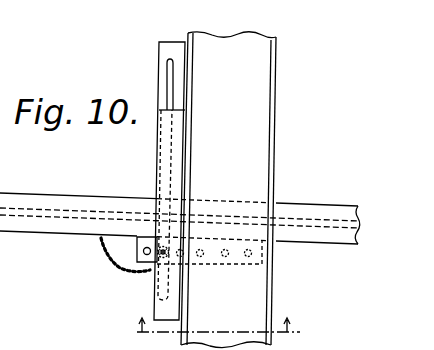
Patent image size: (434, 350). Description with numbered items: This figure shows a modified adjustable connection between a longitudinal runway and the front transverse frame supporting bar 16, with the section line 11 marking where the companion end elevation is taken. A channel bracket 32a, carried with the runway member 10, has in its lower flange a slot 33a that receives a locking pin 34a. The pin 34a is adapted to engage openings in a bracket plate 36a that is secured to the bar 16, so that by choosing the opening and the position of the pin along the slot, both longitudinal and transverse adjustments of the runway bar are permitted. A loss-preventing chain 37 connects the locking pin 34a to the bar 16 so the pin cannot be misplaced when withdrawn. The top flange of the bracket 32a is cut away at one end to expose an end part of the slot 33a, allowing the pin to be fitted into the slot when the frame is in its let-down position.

The post 10 is at (257, 163).
The bar 16 is at (77, 198).
The channel bracket 32a is at (178, 143).
The slot 33a is at (168, 94).
The locking pin 34a is at (183, 267).
The bracket plate 36a is at (273, 278).
The loss-preventing chain 37 is at (115, 267).
The section line 11- 11 is at (216, 331).